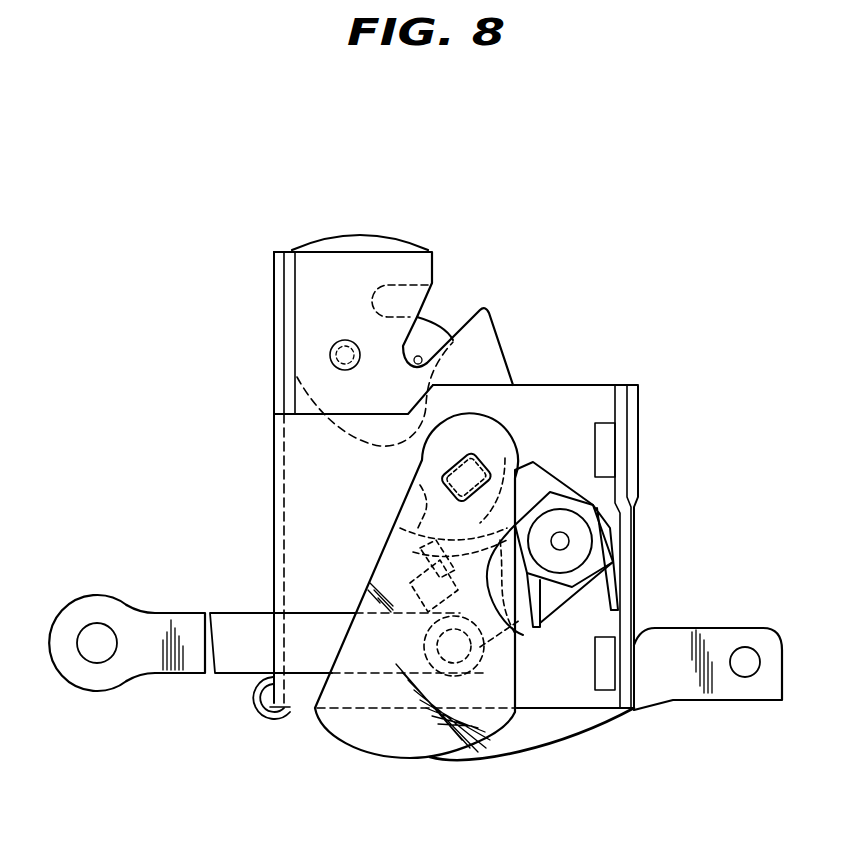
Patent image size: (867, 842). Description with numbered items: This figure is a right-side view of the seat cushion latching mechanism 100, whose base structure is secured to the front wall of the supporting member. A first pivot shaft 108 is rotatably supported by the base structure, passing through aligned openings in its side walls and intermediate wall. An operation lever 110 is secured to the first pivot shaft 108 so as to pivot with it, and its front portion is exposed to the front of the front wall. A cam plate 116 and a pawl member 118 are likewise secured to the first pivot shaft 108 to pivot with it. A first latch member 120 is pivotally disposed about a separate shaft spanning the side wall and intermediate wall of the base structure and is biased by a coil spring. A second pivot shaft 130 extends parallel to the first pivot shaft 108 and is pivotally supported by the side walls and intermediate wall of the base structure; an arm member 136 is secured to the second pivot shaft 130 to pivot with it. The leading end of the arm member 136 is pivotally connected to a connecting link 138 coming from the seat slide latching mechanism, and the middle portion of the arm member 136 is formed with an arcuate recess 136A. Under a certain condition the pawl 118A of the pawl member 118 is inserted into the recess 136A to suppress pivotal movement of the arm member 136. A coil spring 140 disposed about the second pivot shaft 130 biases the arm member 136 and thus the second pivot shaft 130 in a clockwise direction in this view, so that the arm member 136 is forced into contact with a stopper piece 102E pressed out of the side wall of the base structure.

The seat cushion latching mechanism 100 is at (563, 283).
The stopper piece 102E is at (413, 577).
The first pivot shaft 108 is at (477, 463).
The operation lever 110 is at (507, 750).
The cam plate 116 is at (398, 737).
The pawl member 118 is at (417, 487).
The pawl 118A is at (400, 528).
The first latch member 120 is at (352, 236).
The second pivot shaft 130 is at (580, 536).
The arm member 136 is at (547, 477).
The arcuate recess 136A is at (517, 637).
The connecting link 138 is at (97, 683).
The coil spring 140 is at (608, 576).